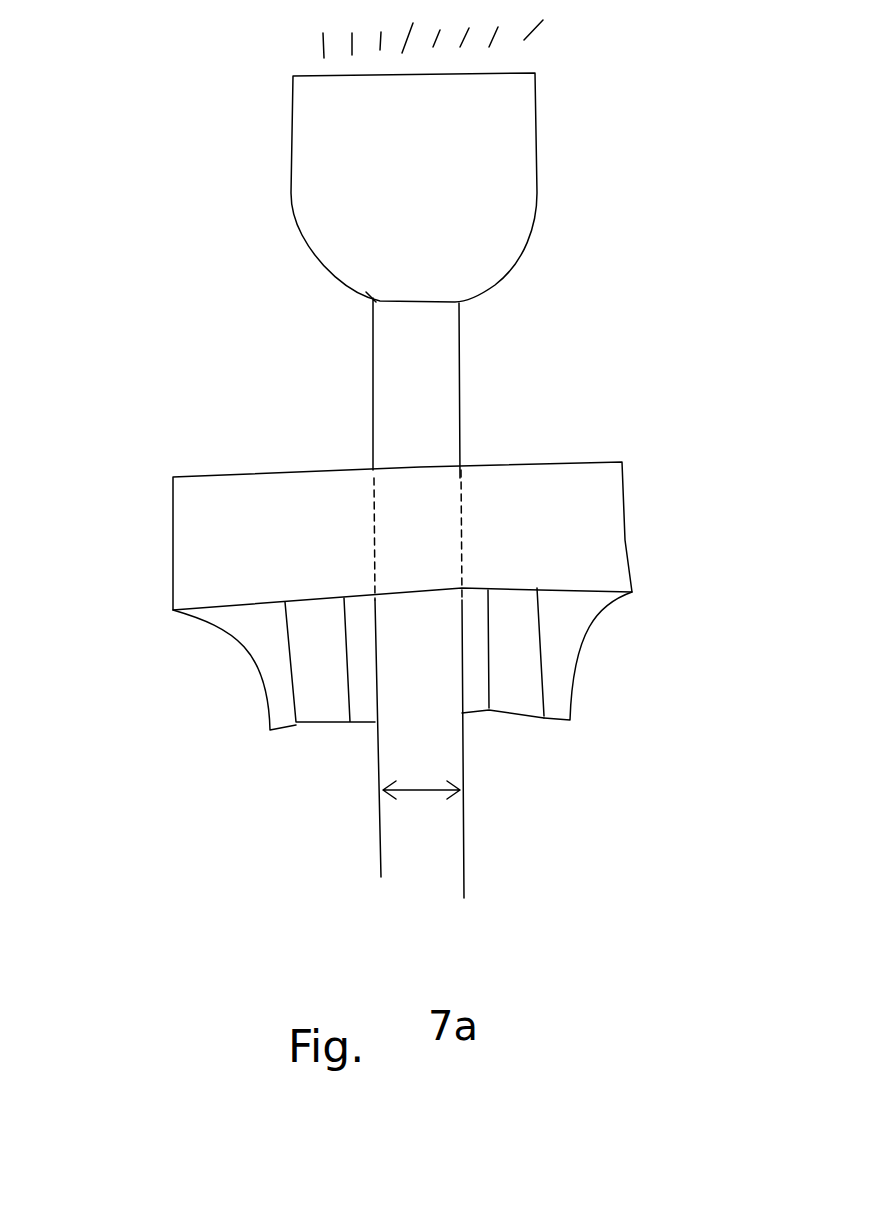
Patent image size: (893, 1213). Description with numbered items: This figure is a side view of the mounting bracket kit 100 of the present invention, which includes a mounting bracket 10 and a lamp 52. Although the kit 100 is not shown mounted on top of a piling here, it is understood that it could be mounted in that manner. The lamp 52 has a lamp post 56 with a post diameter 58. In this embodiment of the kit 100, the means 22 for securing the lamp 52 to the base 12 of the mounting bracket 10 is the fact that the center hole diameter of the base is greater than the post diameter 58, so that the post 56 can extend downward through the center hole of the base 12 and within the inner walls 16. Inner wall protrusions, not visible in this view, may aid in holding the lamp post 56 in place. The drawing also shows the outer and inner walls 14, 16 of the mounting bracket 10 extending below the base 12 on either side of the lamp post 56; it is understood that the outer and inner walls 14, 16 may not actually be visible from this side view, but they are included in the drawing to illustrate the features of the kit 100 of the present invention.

The mounting bracket kit 100 is at (137, 248).
The lamp 52 is at (600, 118).
The lamp post 56 is at (450, 372).
The mounting bracket 10 is at (670, 490).
The base 12 is at (190, 522).
The means for securing lamp to base 22 is at (447, 535).
The outer walls 14 is at (283, 727).
The inner walls 16 is at (365, 717).
The post diameter 58 is at (421, 806).